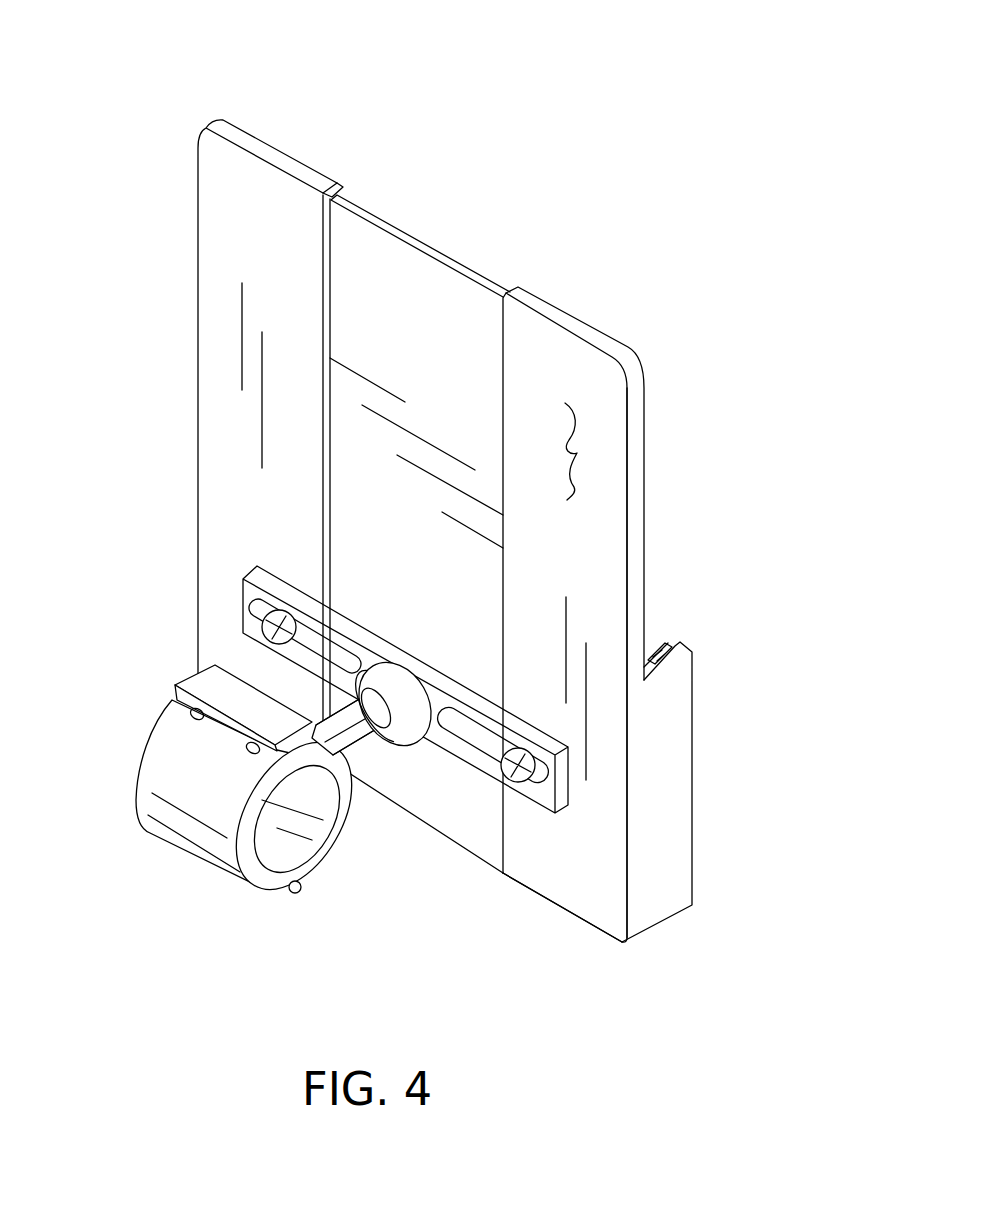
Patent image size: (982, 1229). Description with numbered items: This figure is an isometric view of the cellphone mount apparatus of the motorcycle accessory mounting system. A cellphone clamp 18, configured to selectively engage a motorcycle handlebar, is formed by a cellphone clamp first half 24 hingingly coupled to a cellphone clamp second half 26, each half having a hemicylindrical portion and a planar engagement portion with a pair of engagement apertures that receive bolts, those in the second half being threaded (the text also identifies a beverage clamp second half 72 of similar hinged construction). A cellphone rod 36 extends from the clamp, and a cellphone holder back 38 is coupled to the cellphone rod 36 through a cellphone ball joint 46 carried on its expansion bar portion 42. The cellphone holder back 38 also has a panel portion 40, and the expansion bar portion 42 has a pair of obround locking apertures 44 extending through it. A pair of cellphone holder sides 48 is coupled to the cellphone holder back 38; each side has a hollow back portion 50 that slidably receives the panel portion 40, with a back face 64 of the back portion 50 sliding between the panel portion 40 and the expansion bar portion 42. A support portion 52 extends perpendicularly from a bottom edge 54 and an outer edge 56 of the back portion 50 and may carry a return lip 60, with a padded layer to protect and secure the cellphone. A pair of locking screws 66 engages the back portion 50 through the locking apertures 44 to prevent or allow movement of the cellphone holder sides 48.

The cellphone clamp 18 is at (288, 892).
The cellphone clamp first half 24 is at (330, 840).
The cellphone clamp second half 26 is at (202, 856).
The cellphone rod 36 is at (350, 740).
The cellphone holder back 38 is at (619, 679).
The panel portion 40 is at (432, 305).
The expansion bar portion 42 is at (404, 632).
The obround locking apertures 44 is at (455, 725).
The cellphone ball joint 46 is at (402, 723).
The cellphone holder sides 48 is at (469, 541).
The back portion 50 is at (222, 347).
The support portion 52 is at (730, 752).
The bottom edge 54 is at (580, 920).
The outer edge 56 is at (635, 475).
The return lip 60 is at (678, 645).
The back face 64 is at (577, 452).
The locking screws 66 is at (505, 765).
The beverage clamp second half 72 is at (248, 750).